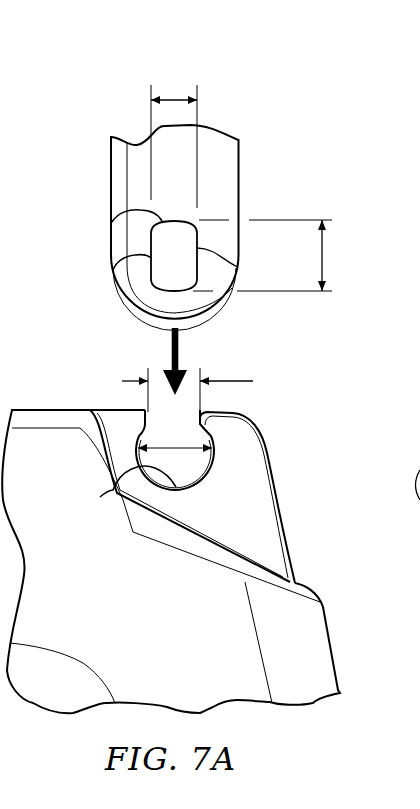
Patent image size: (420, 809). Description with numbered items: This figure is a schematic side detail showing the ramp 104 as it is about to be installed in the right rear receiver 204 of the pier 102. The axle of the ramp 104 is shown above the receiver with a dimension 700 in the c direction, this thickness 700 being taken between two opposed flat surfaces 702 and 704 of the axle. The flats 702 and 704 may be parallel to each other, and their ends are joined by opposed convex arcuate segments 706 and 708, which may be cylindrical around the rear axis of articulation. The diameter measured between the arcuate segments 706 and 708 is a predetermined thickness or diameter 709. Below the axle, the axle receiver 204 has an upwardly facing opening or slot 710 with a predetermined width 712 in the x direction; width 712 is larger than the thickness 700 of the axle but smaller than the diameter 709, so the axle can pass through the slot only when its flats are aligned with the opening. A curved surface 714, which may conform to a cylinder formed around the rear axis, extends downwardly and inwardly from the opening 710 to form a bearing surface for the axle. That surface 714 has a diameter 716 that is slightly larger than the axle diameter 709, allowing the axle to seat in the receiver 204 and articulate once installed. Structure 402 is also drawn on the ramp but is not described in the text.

The dimension 700 is at (173, 98).
The ramp 104 is at (98, 183).
The wall of second component 402 is at (223, 172).
The convex arcuate segment 708 is at (112, 222).
The flat surface 702 is at (112, 272).
The convex arcuate segment 706 is at (152, 292).
The flat surface 704 is at (238, 267).
The diameter 709 is at (323, 256).
The opening 710 is at (166, 421).
The width 712 is at (232, 380).
The pier 102 is at (93, 600).
The right rear receiver 204 is at (265, 527).
The diameter 716 is at (185, 453).
The curved surface 714 is at (100, 497).